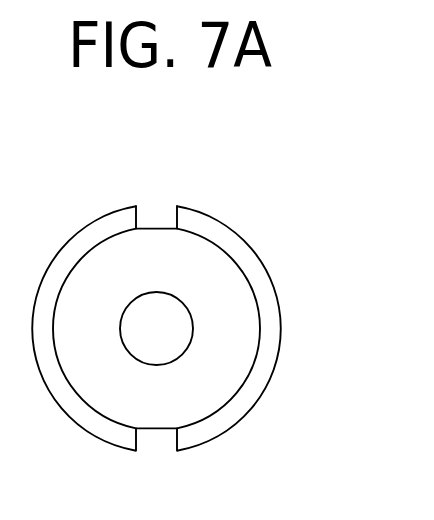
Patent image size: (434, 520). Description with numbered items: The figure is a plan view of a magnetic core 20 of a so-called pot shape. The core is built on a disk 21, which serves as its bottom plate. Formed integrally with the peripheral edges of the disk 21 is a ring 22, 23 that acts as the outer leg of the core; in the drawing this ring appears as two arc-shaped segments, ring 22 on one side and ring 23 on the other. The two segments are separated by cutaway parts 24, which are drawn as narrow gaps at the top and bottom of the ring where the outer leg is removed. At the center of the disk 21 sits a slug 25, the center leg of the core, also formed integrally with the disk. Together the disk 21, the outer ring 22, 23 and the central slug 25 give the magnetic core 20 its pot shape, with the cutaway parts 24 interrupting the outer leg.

The magnetic core 20 is at (186, 303).
The disk 21 is at (240, 302).
The ring 22 is at (263, 368).
The ring 23 is at (53, 382).
The cutaway parts 24 is at (160, 218).
The slug 25 is at (121, 308).